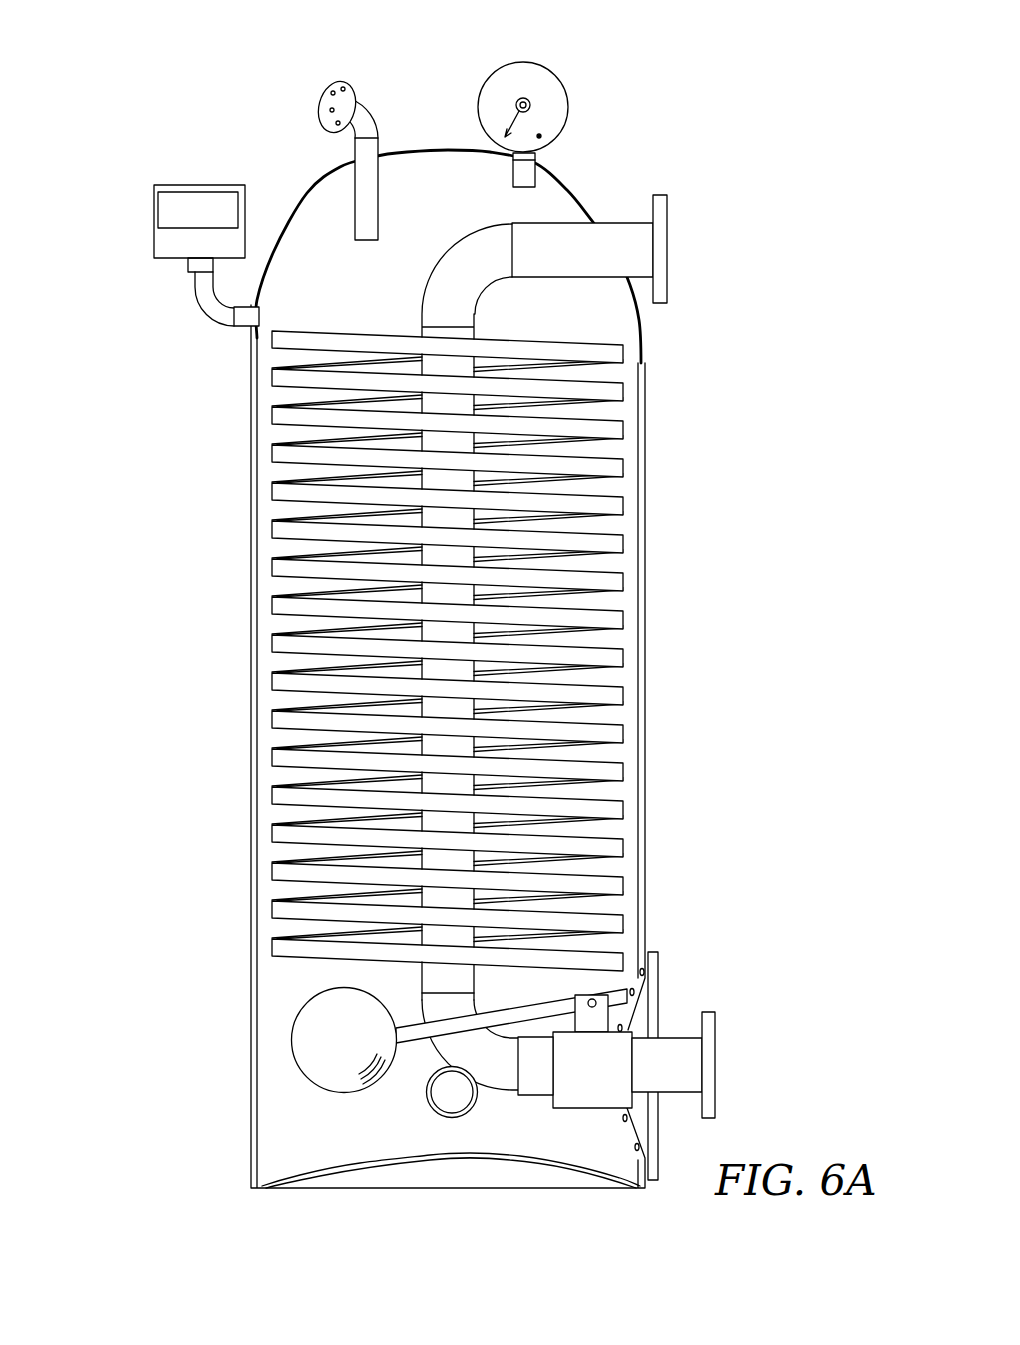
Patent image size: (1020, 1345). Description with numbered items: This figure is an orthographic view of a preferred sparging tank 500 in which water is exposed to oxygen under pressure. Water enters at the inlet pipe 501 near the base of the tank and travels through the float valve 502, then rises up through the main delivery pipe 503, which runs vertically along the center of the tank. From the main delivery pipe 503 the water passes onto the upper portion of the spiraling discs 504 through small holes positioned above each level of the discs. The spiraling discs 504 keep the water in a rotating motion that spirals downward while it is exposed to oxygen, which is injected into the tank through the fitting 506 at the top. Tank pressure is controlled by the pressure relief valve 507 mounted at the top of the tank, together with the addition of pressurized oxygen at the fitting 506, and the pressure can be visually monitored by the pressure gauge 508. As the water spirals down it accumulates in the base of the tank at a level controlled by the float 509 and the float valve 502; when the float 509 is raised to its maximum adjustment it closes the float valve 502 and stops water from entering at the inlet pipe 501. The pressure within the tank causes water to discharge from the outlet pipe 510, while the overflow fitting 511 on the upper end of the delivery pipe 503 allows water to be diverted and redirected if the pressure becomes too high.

The sparging tank 500 is at (238, 473).
The inlet pipe 501 is at (713, 1070).
The float valve 502 is at (598, 1063).
The main delivery pipe 503 is at (468, 260).
The spiraling discs 504 is at (617, 542).
The fitting 506 is at (332, 82).
The pressure relief valve 507 is at (182, 185).
The pressure gauge 508 is at (557, 79).
The float 509 is at (328, 1040).
The outlet pipe 510 is at (445, 1093).
The overflow fitting 511 is at (667, 207).